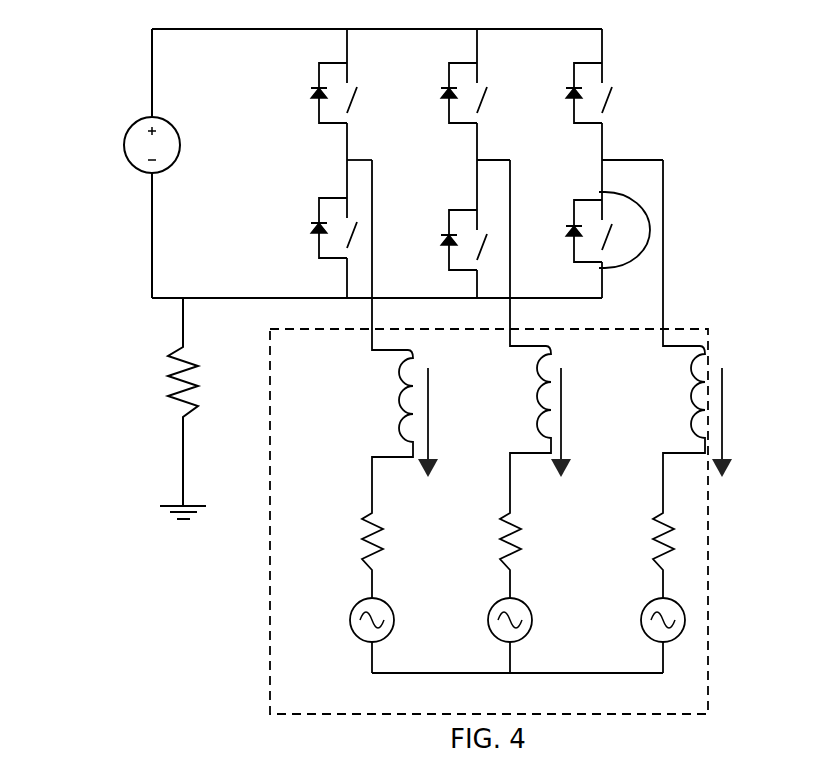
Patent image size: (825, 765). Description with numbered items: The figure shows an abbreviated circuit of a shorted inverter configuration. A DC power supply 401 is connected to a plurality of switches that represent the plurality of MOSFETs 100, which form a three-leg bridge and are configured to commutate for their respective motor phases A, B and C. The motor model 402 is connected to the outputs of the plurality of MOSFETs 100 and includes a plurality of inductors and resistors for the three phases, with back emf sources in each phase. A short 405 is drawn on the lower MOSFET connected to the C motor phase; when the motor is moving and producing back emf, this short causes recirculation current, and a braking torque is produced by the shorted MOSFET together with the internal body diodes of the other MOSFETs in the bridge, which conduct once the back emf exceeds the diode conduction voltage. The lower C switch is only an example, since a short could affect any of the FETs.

The DC power supply 401 is at (139, 122).
The plurality of MOSFETs 100 is at (475, 163).
The short 405 is at (647, 205).
The motor model 402 is at (715, 335).